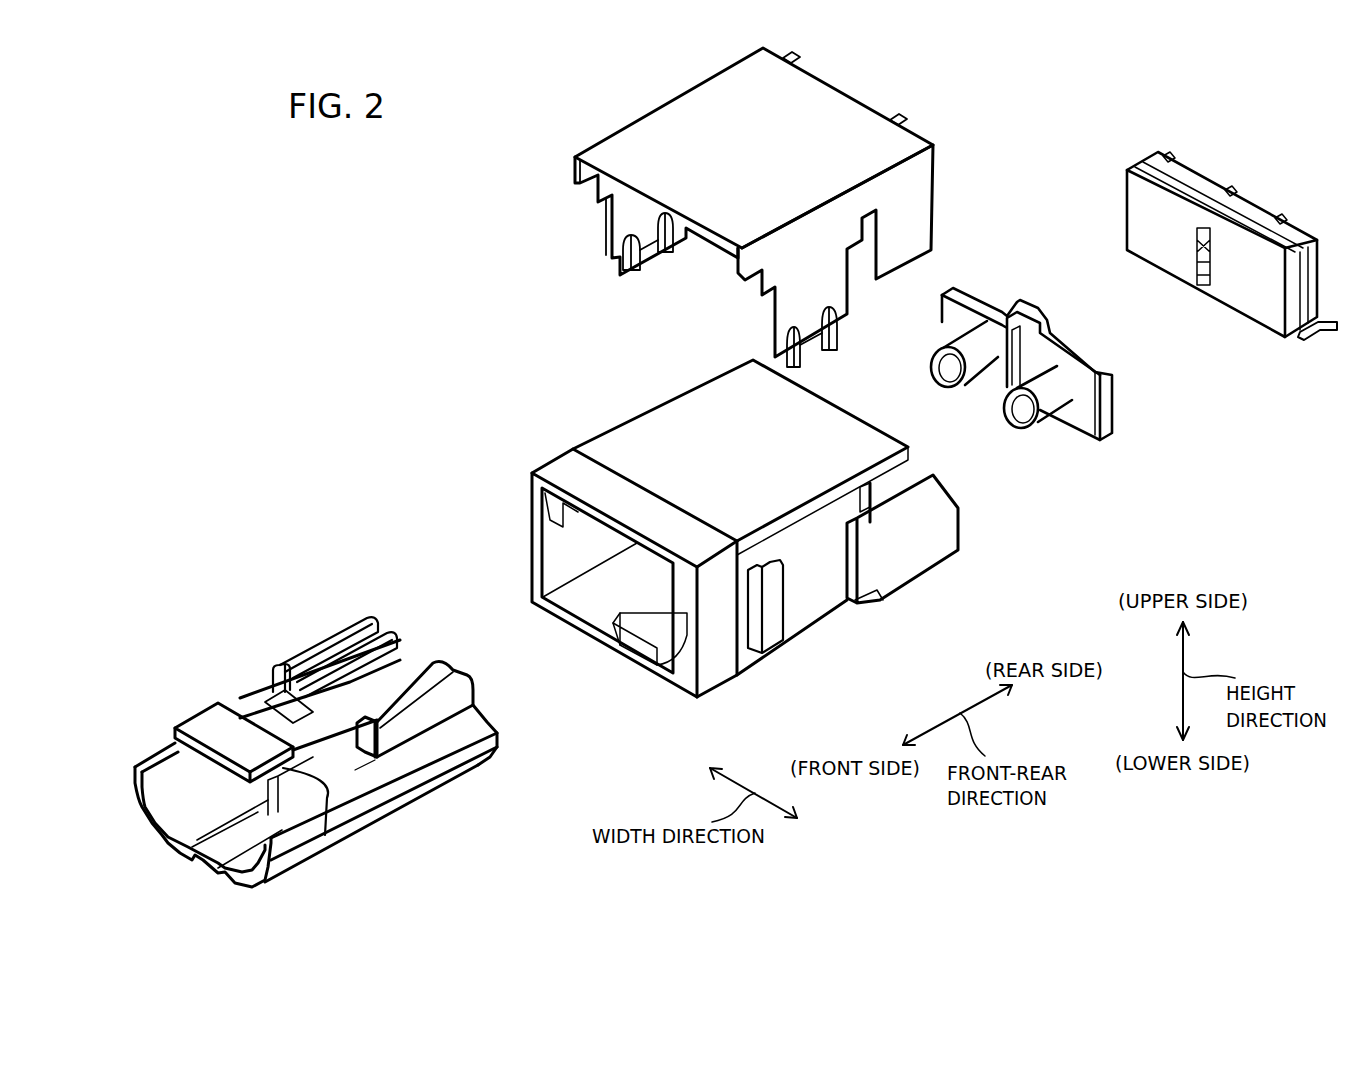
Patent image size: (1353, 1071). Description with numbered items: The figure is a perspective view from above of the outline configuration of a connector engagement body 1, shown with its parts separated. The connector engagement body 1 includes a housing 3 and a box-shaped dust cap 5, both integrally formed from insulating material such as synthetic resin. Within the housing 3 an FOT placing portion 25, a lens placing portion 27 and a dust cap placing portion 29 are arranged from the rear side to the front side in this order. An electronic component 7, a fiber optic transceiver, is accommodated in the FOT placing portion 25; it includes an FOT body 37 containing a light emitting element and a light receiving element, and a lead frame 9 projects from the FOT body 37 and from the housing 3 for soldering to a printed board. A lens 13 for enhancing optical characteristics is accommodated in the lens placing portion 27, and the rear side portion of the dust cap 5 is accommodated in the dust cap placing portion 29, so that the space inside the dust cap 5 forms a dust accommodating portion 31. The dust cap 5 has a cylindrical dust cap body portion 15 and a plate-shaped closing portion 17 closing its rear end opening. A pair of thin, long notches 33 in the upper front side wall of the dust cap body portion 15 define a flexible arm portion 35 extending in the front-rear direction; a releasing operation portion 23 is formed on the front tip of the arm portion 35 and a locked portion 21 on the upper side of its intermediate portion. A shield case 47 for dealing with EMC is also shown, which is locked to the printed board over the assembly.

The connector engagement body 1 is at (497, 428).
The housing 3 is at (677, 400).
The dust cap 5 is at (319, 746).
The electronic component 7 is at (1190, 270).
The lead frame 9 is at (1333, 335).
The lens 13 is at (1105, 405).
The dust cap body portion 15 is at (457, 762).
The closing portion 17 is at (398, 662).
The locked portion 21 is at (284, 703).
The releasing operation portion 23 is at (208, 727).
The FOT placing portion 25 is at (827, 458).
The lens placing portion 27 is at (763, 497).
The dust cap placing portion 29 is at (692, 538).
The dust accommodating portion 31 is at (365, 767).
The notches 33 is at (322, 756).
The arm portion 35 is at (270, 712).
The FOT body 37 is at (1138, 215).
The shield case 47 is at (733, 67).